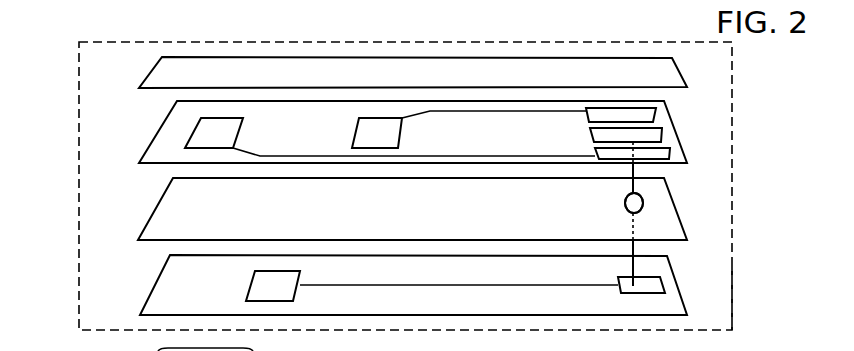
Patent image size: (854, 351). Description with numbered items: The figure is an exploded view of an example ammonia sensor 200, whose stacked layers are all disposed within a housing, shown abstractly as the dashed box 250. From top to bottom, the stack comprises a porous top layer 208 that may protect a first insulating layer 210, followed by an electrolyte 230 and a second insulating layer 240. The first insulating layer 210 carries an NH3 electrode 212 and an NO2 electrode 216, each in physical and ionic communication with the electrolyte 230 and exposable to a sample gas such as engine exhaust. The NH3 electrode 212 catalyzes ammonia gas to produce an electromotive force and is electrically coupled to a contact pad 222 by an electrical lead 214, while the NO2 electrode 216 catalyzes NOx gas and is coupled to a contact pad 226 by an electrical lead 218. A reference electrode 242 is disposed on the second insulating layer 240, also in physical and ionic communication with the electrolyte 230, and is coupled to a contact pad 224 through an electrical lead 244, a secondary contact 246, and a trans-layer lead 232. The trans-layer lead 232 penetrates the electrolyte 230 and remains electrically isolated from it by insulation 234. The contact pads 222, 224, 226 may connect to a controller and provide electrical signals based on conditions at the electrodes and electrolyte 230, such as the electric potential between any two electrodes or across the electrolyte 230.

The ammonia sensor 200 is at (75, 37).
The porous top layer 208 is at (146, 63).
The first insulating layer 210 is at (148, 126).
The NH3 electrode 212 is at (241, 128).
The electrical lead 214 is at (466, 156).
The NO2 electrode 216 is at (358, 126).
The electrical lead 218 is at (446, 111).
The contact pad 222 is at (669, 152).
The contact pad 224 is at (661, 132).
The contact pad 226 is at (655, 110).
The electrolyte 230 is at (148, 200).
The trans-layer lead 232 is at (632, 190).
The insulation 234 is at (643, 201).
The second insulating layer 240 is at (148, 274).
The reference electrode 242 is at (252, 287).
The electrical lead 244 is at (457, 285).
The secondary contact 246 is at (665, 288).
The housing 250 is at (733, 266).